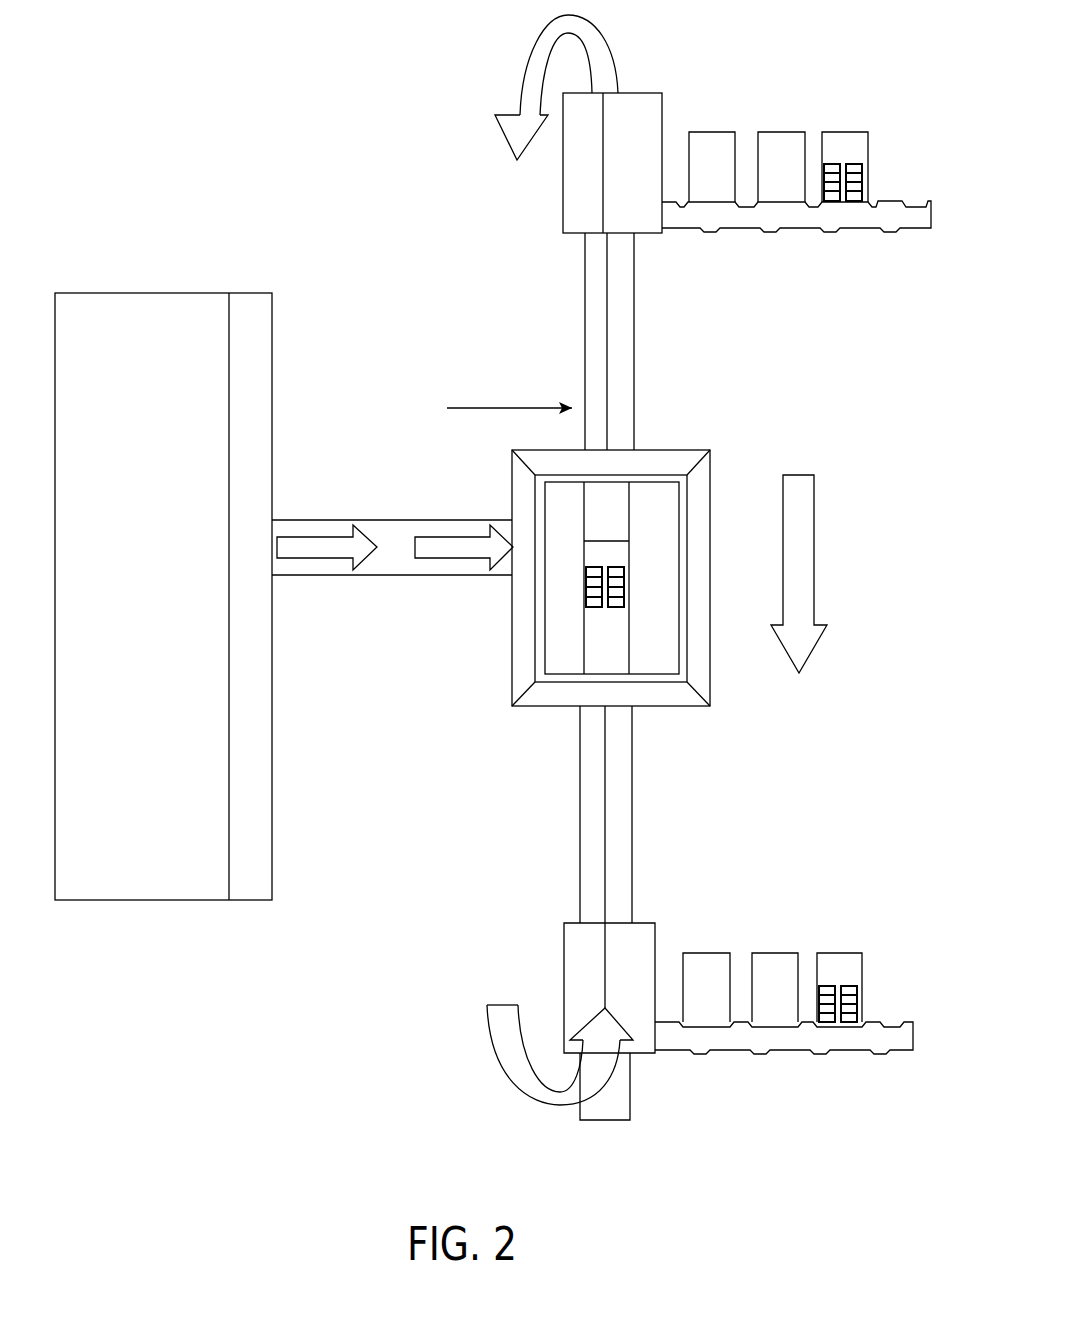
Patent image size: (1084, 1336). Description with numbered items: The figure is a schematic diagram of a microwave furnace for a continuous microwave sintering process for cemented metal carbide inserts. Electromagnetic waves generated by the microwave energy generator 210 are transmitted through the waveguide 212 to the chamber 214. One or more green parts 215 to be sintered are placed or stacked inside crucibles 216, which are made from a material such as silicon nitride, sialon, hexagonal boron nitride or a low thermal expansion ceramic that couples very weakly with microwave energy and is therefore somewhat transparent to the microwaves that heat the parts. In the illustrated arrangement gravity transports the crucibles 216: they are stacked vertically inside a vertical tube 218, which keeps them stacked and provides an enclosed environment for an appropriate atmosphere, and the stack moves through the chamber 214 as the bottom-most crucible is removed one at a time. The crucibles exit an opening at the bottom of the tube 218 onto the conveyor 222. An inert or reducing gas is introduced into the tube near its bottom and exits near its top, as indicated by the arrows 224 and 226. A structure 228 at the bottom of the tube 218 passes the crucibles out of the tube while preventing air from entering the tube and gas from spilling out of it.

The microwave energy generator 210 is at (178, 614).
The waveguide 212 is at (461, 600).
The chamber 214 is at (707, 615).
The parts 215 is at (619, 575).
The crucibles 216 is at (613, 522).
The vertical tube 218 is at (585, 292).
The conveyor 222 is at (725, 224).
The arrow 224 is at (515, 1077).
The arrow 226 is at (595, 22).
The structure 228 is at (647, 1052).